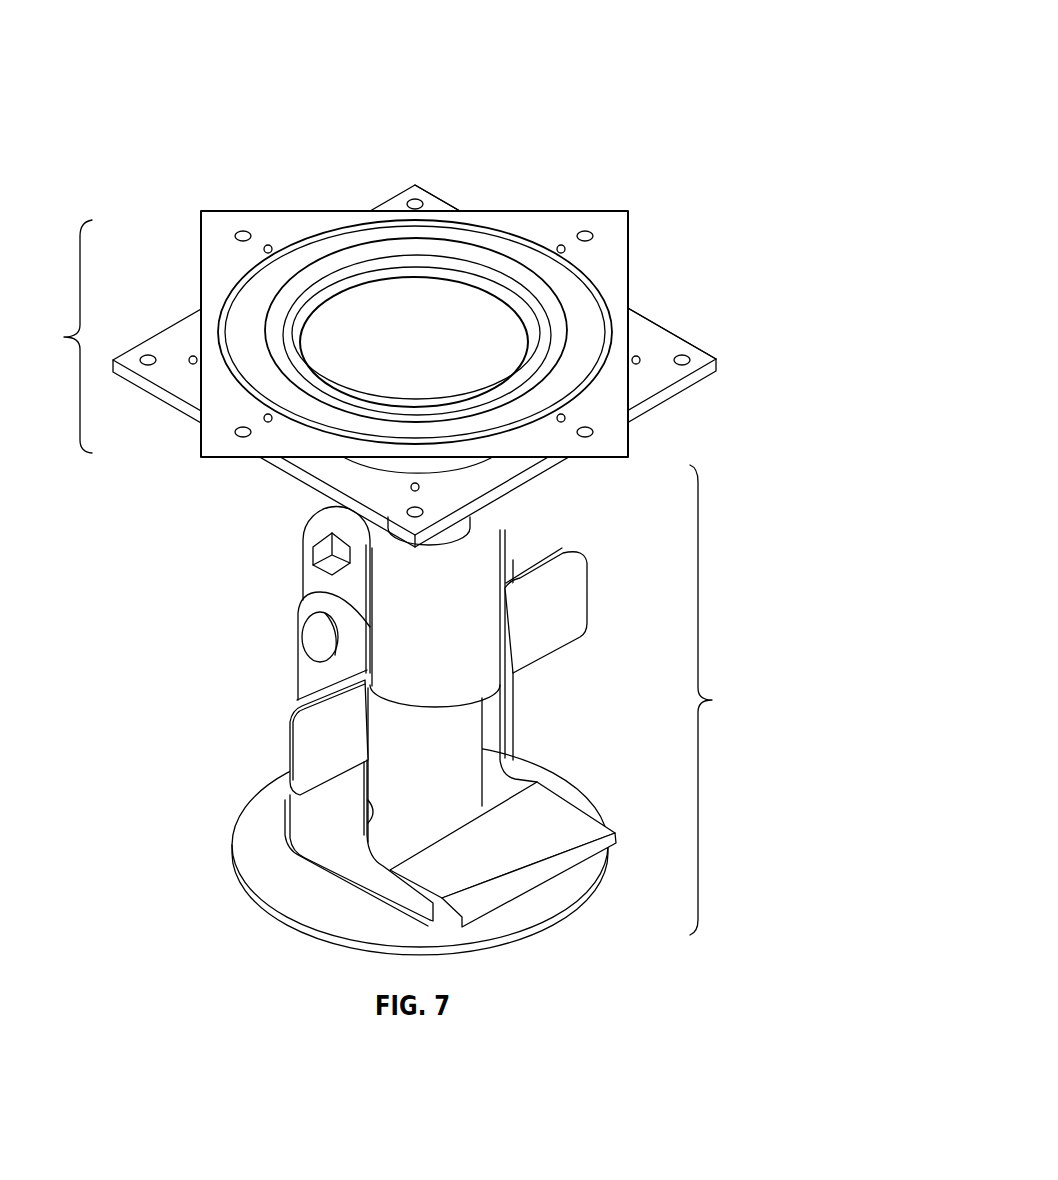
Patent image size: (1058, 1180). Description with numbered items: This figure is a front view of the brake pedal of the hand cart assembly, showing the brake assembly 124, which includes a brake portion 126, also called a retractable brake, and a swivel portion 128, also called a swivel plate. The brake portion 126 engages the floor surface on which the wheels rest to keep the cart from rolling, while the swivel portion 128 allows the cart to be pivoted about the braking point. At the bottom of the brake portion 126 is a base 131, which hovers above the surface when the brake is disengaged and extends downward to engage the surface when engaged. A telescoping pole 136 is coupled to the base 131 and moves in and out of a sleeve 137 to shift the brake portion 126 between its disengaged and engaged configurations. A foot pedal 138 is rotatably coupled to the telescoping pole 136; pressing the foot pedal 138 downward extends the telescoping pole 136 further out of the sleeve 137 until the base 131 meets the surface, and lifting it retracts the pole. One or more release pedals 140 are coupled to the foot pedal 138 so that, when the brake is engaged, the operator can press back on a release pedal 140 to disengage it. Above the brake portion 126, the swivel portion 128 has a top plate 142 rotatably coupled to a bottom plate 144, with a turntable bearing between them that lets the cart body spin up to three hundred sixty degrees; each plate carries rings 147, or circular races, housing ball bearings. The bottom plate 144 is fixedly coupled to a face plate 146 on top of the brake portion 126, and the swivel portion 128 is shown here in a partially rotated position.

The brake assembly 124 is at (652, 50).
The brake portion 126 is at (725, 700).
The swivel portion 128 is at (55, 336).
The base 131 is at (283, 892).
The telescoping pole 136 is at (467, 746).
The sleeve 137 is at (485, 663).
The foot pedal 138 is at (600, 845).
The release pedals 140 is at (573, 600).
The top plate 142 is at (689, 261).
The bottom plate 144 is at (708, 358).
The face plate 146 is at (676, 410).
The rings 147 is at (334, 262).